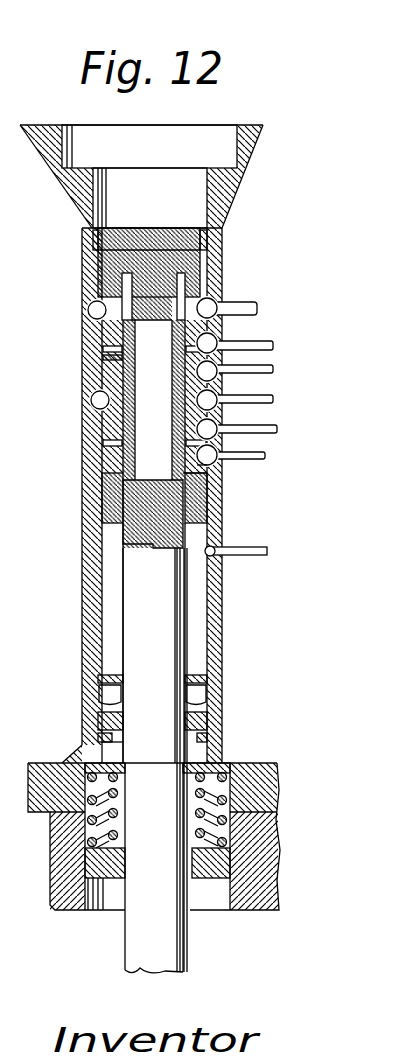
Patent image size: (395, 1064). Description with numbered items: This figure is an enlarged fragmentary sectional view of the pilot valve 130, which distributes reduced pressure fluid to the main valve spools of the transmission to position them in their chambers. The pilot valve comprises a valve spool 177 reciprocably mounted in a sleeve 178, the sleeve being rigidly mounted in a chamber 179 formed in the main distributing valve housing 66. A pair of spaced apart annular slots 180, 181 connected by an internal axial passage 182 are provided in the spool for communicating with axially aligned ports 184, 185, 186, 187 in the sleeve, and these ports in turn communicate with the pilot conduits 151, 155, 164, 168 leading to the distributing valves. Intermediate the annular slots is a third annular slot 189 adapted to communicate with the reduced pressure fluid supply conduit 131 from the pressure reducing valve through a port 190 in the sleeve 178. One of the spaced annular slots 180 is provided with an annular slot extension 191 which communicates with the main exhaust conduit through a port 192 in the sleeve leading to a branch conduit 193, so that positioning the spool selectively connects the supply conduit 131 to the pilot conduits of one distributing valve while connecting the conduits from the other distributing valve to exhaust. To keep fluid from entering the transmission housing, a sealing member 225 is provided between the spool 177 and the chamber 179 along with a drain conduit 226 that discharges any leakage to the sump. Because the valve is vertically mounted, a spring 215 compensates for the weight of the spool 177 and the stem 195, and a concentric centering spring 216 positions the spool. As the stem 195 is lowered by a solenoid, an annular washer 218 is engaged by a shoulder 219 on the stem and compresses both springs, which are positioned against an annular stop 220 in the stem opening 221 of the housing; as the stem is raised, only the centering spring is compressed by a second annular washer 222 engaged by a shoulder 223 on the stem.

The main distributing valve housing 66 is at (250, 146).
The sleeve 178 is at (192, 230).
The pilot valve 130 is at (81, 509).
The chamber 179 is at (105, 498).
The valve spool 177 is at (173, 260).
The annular slot extension 191 is at (196, 283).
The internal axial passage 182 is at (148, 482).
The annular slot 181 is at (204, 481).
The branch conduit 193 is at (257, 309).
The port 192 is at (208, 302).
The pilot conduit 155 is at (272, 340).
The port 185 is at (217, 334).
The port 184 is at (213, 353).
The pilot conduit 151 is at (252, 369).
The port 190 is at (210, 376).
The pilot conduit 164 is at (250, 400).
The reduced pressure fluid supply conduit 131 is at (213, 405).
The pilot conduit 168 is at (257, 459).
The port 186 is at (216, 433).
The port 187 is at (215, 462).
The annular slot 180 is at (100, 329).
The third annular slot 189 is at (97, 403).
The drain conduit 226 is at (244, 555).
The shoulder 219 is at (148, 762).
The stem 195 is at (183, 933).
The sealing member 225 is at (210, 678).
The centering spring 216 is at (224, 754).
The annular washer 218 is at (98, 738).
The spring 215 is at (230, 779).
The second annular washer 222 is at (130, 838).
The shoulder 223 is at (148, 850).
The annular stop 220 is at (108, 893).
The stem opening 221 is at (93, 908).